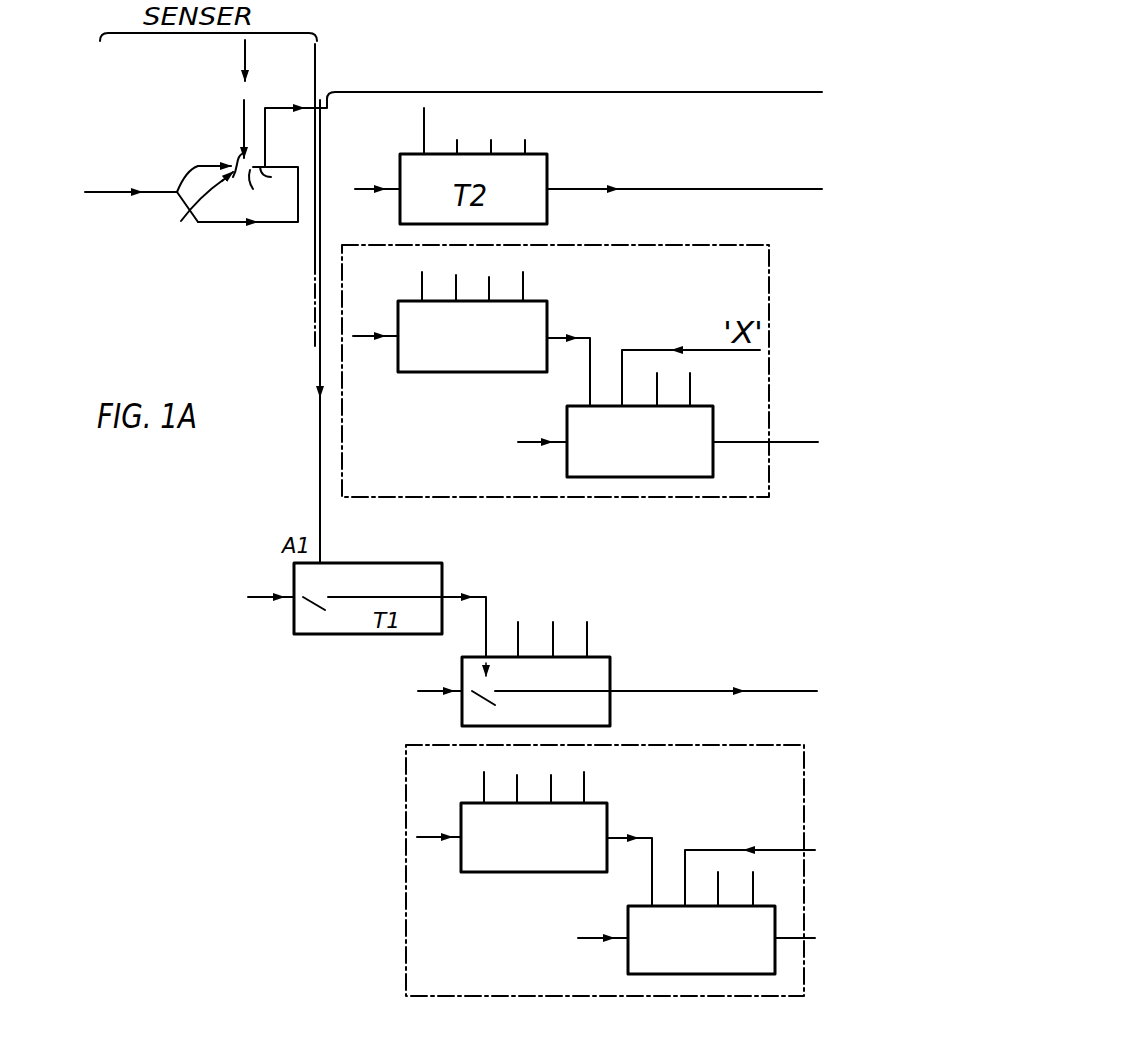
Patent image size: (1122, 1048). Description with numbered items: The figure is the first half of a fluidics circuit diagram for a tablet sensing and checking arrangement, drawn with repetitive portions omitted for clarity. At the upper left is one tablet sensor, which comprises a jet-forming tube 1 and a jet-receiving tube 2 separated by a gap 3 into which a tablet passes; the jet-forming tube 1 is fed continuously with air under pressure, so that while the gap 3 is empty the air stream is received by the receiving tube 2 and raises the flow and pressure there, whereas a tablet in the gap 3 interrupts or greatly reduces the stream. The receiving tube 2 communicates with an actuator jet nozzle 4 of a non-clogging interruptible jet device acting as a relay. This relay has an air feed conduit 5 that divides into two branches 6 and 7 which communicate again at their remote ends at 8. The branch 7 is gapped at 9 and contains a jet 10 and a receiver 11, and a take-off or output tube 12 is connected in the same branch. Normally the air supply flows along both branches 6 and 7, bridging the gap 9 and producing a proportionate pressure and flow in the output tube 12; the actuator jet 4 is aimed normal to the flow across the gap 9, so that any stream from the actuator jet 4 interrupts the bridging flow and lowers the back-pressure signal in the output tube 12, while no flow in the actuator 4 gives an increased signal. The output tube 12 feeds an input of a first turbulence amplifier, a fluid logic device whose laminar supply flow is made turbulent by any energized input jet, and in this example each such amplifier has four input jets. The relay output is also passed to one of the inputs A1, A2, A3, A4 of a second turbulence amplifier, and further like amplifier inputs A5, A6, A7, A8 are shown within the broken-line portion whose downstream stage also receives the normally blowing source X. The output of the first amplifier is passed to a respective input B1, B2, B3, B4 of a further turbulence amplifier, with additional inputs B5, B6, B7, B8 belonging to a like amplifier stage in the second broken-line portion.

The jet-forming tube 1 is at (245, 53).
The jet-receiving tube 2 is at (244, 114).
The gap 3 is at (250, 90).
The actuator jet nozzle 4 is at (207, 196).
The air feed conduit 5 is at (148, 192).
The branch 6 is at (213, 224).
The branch 7 is at (177, 195).
The junction of branches 8 is at (298, 180).
The gap 9 is at (259, 193).
The jet 10 is at (190, 217).
The receiver 11 is at (274, 179).
The output tube 12 is at (265, 140).
The signal A1 is at (406, 131).
The signal A2 is at (457, 136).
The signal A3 is at (503, 136).
The signal A4 is at (546, 136).
The signal A5 is at (405, 286).
The signal A6 is at (447, 276).
The signal A7 is at (491, 276).
The signal A8 is at (541, 286).
The input of turbulence amplifier B1 is at (467, 645).
The input of turbulence amplifier B2 is at (527, 629).
The input of turbulence amplifier B3 is at (569, 630).
The signal B4 is at (610, 634).
The signal B5 is at (464, 787).
The signal B6 is at (511, 778).
The signal B7 is at (554, 780).
The signal B8 is at (608, 787).